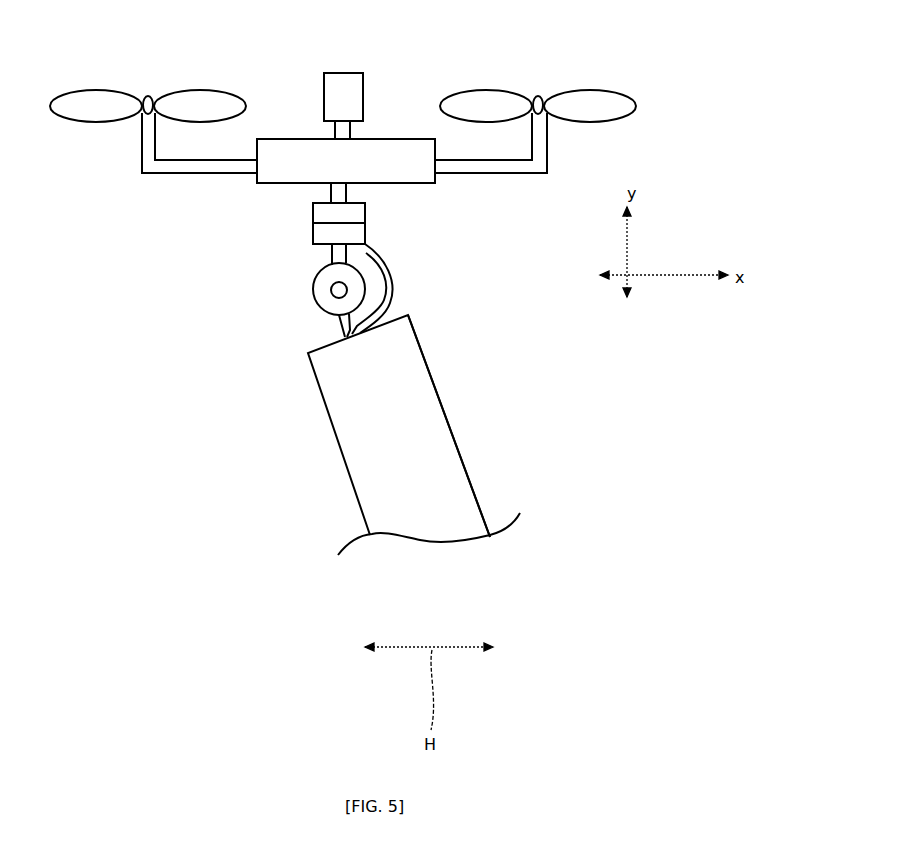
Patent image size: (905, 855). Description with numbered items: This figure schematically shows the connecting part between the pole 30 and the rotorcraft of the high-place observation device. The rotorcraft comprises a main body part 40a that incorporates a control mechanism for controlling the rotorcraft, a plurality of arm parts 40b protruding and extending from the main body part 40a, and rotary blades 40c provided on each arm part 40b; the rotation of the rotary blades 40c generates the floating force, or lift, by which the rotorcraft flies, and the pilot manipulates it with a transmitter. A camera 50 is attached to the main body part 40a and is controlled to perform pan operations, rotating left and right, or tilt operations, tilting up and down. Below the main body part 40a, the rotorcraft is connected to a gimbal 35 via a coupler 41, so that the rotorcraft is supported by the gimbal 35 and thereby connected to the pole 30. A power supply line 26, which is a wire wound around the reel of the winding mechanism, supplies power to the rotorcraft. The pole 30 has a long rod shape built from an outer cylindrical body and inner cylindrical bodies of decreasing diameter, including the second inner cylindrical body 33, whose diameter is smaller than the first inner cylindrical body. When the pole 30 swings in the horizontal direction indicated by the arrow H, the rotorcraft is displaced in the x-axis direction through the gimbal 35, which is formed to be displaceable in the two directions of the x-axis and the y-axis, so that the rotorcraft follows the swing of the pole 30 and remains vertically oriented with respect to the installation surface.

The rotary blades 40c is at (187, 107).
The arm parts 40b is at (167, 165).
The main body part 40a is at (262, 165).
The camera 50 is at (345, 97).
The coupler 41 is at (365, 230).
The power supply line 26 is at (393, 280).
The gimbal 35 is at (333, 298).
The pole 30 is at (430, 372).
The second inner cylindrical body 33 is at (455, 433).